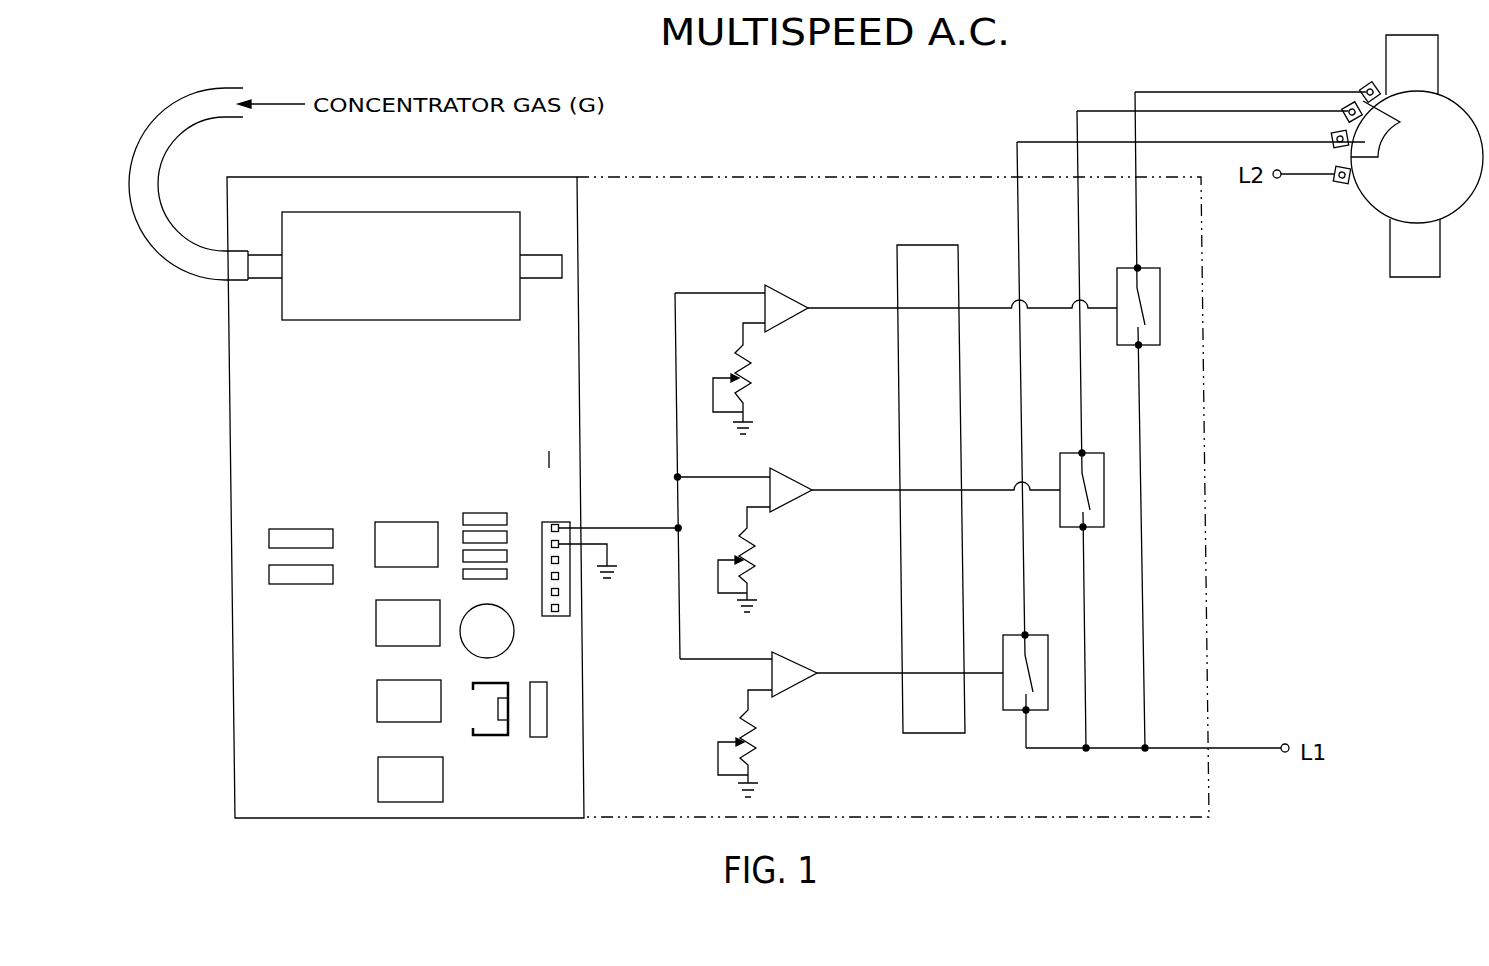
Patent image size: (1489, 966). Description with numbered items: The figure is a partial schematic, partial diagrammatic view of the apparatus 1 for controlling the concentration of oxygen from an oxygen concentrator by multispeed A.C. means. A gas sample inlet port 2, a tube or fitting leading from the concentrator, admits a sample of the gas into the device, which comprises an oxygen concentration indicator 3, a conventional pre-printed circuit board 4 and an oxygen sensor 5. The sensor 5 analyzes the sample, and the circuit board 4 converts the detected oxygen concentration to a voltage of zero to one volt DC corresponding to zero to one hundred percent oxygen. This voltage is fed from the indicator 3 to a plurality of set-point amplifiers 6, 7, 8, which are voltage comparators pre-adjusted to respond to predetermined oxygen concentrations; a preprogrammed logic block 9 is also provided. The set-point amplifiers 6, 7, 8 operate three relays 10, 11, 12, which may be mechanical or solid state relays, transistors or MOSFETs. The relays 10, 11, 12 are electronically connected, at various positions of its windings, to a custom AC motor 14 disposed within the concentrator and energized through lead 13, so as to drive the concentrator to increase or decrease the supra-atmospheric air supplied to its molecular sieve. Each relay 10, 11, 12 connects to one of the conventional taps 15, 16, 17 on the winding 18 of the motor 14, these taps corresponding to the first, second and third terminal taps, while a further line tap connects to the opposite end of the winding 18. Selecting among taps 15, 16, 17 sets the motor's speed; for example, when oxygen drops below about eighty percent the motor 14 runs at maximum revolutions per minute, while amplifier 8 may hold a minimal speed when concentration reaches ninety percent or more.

The apparatus for controlling the concentration of oxygen 1 is at (783, 175).
The gas sample inlet port 2 is at (180, 102).
The oxygen concentration indicator 3 is at (578, 352).
The pre-printed circuit board 4 is at (552, 453).
The oxygen sensor 5 is at (492, 225).
The set-point amplifier 6 is at (792, 297).
The set-point amplifier 7 is at (797, 483).
The set-point amplifier 8 is at (792, 660).
The preprogrammed logic block 9 is at (925, 733).
The relay 10 is at (1160, 293).
The relay 11 is at (1104, 472).
The relay 12 is at (1048, 670).
The lead 13 is at (628, 530).
The AC motor 14 is at (1380, 215).
The tap 15 is at (1372, 85).
The tap 16 is at (1350, 103).
The tap 17 is at (1335, 136).
The motor winding 18 is at (1438, 92).